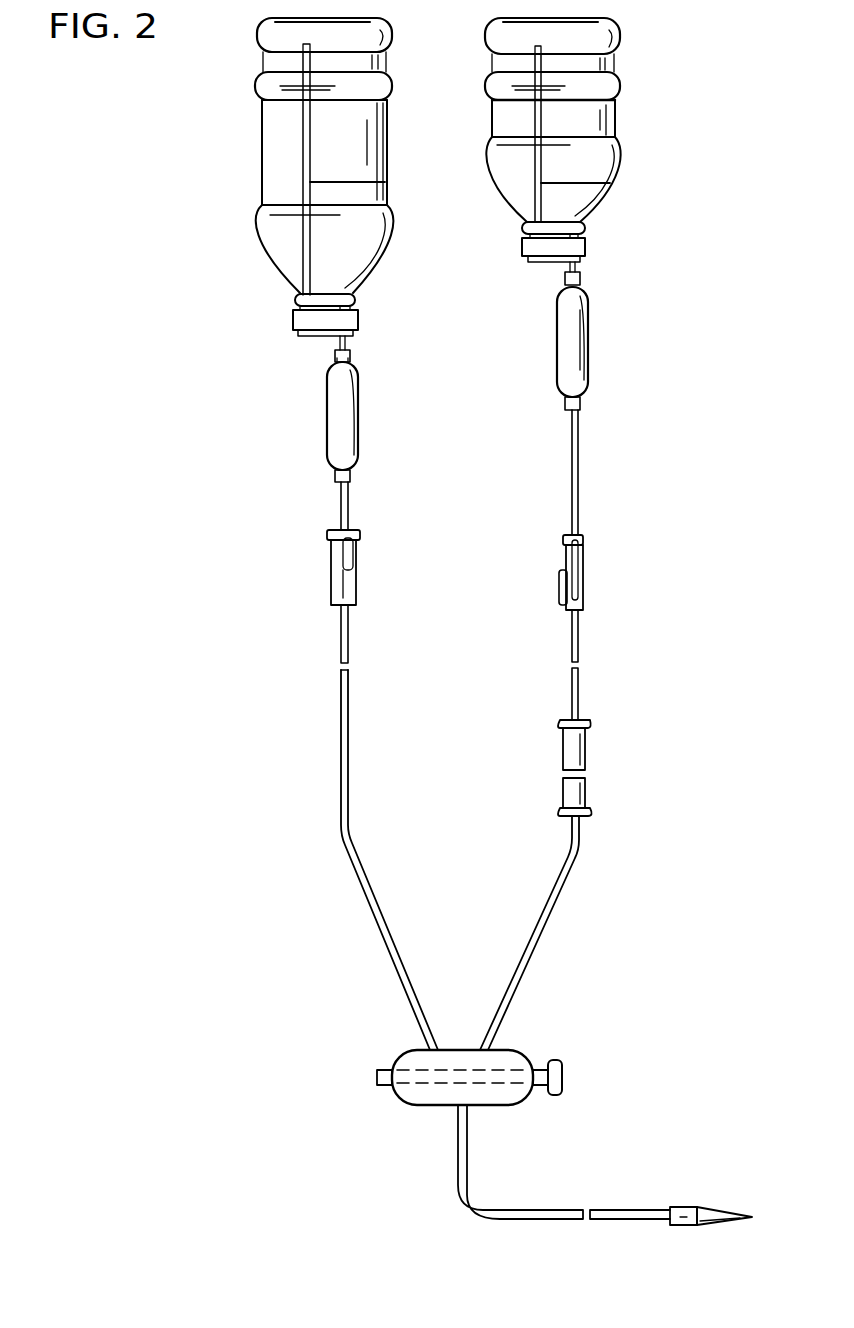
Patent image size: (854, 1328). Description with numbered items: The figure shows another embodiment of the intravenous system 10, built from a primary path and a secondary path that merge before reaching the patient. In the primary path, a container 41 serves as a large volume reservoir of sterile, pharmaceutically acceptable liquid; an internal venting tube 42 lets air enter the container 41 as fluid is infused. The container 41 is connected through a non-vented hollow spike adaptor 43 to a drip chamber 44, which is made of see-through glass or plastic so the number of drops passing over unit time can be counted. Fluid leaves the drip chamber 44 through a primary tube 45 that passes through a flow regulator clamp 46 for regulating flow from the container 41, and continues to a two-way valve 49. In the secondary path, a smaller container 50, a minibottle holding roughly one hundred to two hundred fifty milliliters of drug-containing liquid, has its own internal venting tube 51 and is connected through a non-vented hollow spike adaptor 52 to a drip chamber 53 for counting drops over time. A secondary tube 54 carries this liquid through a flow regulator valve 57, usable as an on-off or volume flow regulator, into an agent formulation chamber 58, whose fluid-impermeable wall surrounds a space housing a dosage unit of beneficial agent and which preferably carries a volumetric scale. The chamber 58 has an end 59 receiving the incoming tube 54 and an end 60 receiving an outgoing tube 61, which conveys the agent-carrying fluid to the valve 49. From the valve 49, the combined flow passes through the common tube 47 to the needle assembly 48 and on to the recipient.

The intravenous system 10 is at (212, 207).
The container 41 is at (397, 142).
The internal venting tube 42 is at (385, 182).
The non-vented hollow spike adaptor 43 is at (346, 343).
The drip chamber 44 is at (359, 418).
The primary tube 45 is at (349, 506).
The flow regulator clamp 46 is at (356, 556).
The common tube 47 is at (468, 1184).
The needle assembly 48 is at (674, 1206).
The two-way valve 49 is at (563, 1073).
The container 50 is at (622, 155).
The internal venting tube 51 is at (612, 183).
The non-vented hollow spike adaptor 52 is at (581, 272).
The drip chamber 53 is at (590, 332).
The secondary tube 54 is at (579, 456).
The flow regulator valve 57 is at (586, 566).
The agent formulation chamber 58 is at (587, 757).
The end 59 is at (583, 721).
The end 60 is at (586, 816).
The tube 61 is at (546, 940).